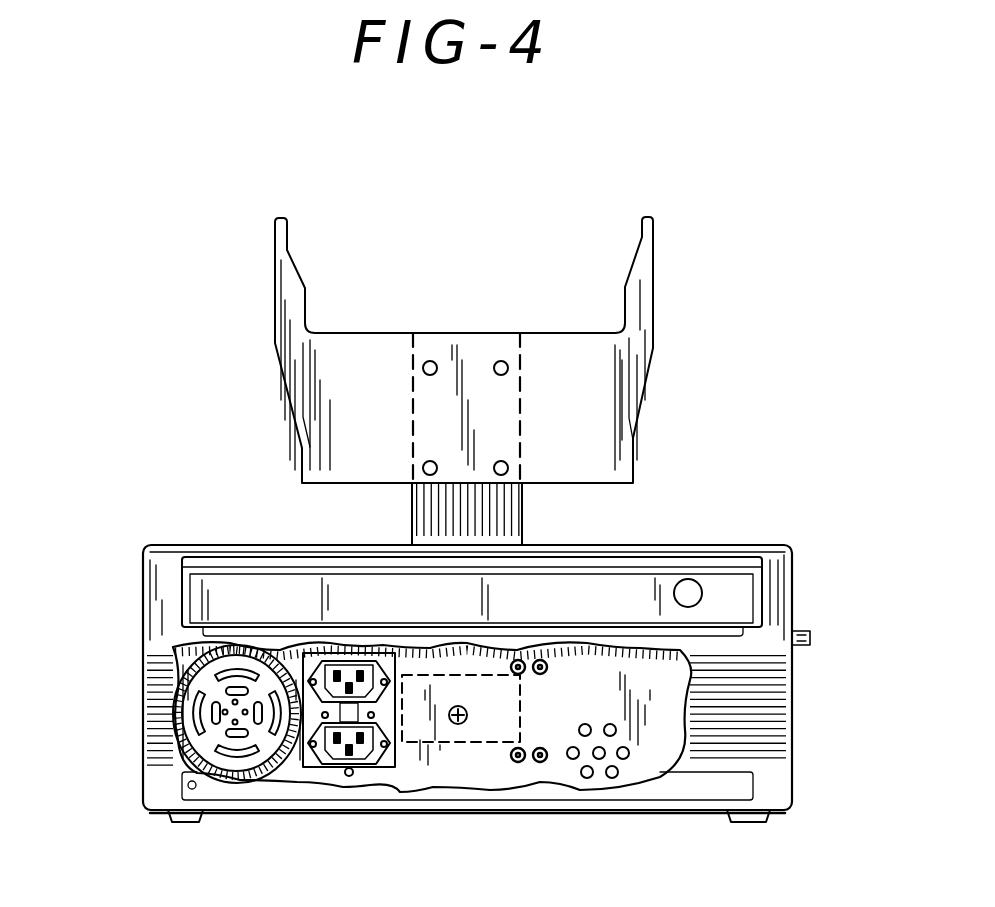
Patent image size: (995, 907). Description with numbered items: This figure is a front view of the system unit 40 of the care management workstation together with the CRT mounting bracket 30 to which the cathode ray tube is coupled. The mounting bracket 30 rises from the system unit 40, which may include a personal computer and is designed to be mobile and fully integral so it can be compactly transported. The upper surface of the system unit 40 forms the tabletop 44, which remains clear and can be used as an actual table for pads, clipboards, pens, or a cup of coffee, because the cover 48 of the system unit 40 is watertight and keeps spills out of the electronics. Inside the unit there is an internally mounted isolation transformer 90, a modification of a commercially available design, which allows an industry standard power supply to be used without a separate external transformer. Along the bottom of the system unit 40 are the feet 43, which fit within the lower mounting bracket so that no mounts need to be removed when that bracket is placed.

The mounting bracket 30 is at (505, 525).
The system unit 40 is at (457, 672).
The feet 43 is at (192, 823).
The tabletop 44 is at (742, 545).
The cover 48 is at (775, 580).
The isolation transformer 90 is at (493, 735).